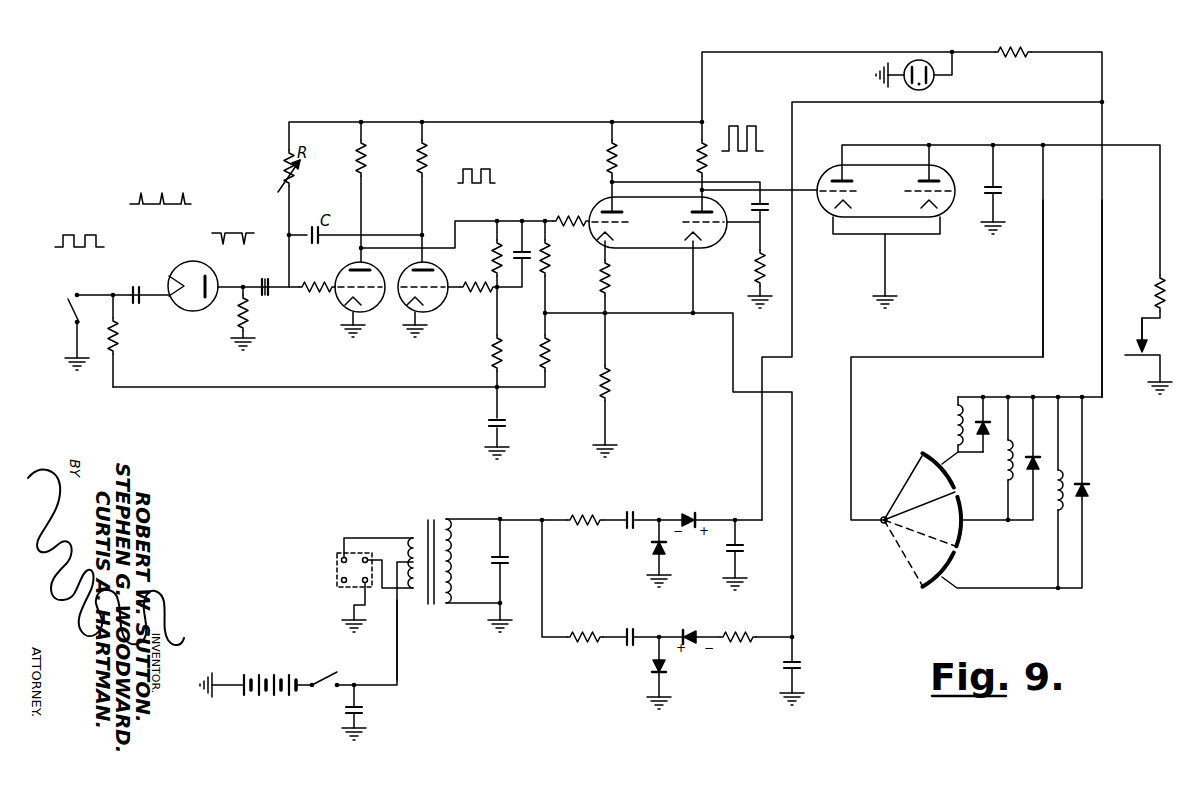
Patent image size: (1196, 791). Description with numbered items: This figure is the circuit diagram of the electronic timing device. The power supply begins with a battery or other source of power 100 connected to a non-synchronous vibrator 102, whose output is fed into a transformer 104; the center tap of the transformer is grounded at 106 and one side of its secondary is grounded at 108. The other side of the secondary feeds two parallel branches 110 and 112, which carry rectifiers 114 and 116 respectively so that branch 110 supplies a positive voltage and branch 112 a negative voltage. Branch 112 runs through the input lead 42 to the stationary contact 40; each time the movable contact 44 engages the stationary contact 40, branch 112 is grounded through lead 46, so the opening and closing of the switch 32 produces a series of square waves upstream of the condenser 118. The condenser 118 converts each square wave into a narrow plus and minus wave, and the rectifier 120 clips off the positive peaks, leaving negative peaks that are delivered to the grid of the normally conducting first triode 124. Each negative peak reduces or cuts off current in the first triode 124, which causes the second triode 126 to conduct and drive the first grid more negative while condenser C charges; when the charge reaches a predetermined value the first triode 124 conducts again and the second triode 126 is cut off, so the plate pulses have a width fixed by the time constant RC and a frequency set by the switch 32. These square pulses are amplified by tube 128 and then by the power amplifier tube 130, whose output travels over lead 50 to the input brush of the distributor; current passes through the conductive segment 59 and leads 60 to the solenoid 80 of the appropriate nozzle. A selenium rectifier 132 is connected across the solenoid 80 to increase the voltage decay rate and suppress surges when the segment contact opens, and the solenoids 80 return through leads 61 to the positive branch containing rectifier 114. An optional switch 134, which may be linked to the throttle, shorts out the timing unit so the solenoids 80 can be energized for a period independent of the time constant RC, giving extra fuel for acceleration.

The switch 32 is at (80, 287).
The stationary contact 40 is at (112, 318).
The input lead 42 is at (96, 292).
The movable contact 44 is at (70, 310).
The lead 46 is at (74, 345).
The lead 50 is at (1043, 255).
The conductive segment 59 is at (942, 456).
The leads 60 is at (950, 466).
The leads 61 is at (1101, 286).
The solenoid 80 is at (949, 425).
The battery or other source of power 100 is at (270, 677).
The non-synchronous vibrator 102 is at (336, 570).
The transformer 104 is at (426, 527).
The ground of transformer center tap 106 is at (400, 660).
The ground of transformer secondary 108 is at (488, 610).
The branch 110 is at (610, 518).
The branch 112 is at (558, 636).
The rectifier 114 is at (699, 513).
The rectifier 116 is at (688, 632).
The condenser 118 is at (138, 283).
The rectifier 120 is at (210, 268).
The first triode 124 is at (341, 274).
The second triode 126 is at (444, 272).
The tube 128 is at (663, 244).
The power amplifier tube 130 is at (876, 224).
The selenium rectifier 132 is at (984, 410).
The switch 134 is at (1143, 322).